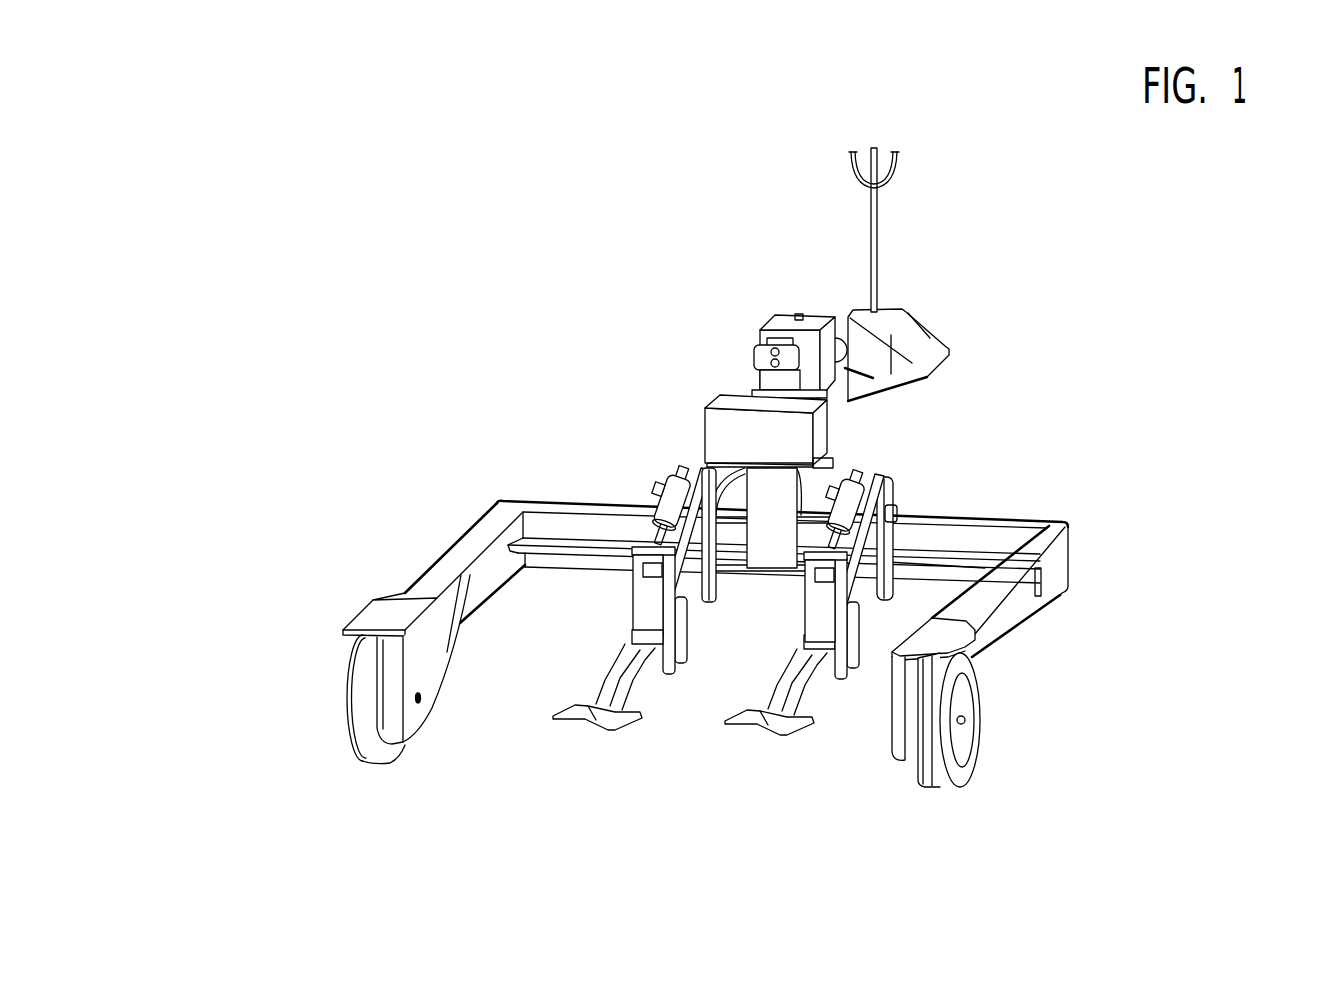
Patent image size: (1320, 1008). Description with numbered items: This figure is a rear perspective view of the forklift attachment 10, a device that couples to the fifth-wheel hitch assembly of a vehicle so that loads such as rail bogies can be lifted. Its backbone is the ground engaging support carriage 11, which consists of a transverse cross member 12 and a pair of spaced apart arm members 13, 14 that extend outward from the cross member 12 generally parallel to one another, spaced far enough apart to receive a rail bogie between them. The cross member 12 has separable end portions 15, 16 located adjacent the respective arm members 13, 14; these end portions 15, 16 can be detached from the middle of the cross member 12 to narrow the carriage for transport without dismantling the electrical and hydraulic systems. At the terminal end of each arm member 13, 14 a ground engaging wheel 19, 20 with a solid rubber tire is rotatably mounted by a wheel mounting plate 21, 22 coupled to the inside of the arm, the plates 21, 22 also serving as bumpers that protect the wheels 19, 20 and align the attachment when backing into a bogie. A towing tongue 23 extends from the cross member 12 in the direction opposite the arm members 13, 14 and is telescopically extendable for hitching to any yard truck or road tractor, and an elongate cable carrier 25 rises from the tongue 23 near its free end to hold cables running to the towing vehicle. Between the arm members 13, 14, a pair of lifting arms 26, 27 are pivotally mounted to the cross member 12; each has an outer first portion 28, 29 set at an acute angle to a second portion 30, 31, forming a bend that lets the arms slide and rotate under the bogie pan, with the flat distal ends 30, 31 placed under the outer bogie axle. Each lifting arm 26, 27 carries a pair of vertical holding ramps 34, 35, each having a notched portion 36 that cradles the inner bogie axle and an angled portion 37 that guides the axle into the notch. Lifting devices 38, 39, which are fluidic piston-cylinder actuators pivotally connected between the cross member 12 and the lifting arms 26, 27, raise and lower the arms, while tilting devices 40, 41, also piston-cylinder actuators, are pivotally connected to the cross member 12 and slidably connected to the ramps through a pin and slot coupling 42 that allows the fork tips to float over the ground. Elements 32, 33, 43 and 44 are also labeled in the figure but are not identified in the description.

The forklift attachment 10 is at (441, 160).
The support carriage 11 is at (1158, 404).
The cross member 12 is at (782, 468).
The arm member 13 is at (416, 540).
The arm member 14 is at (1102, 573).
The end portion 15 is at (724, 491).
The end portion 16 is at (998, 467).
The ground engaging wheel 19 is at (306, 727).
The ground engaging wheel 20 is at (1060, 709).
The wheel mounting plate 21 is at (406, 734).
The wheel mounting plate 22 is at (921, 764).
The towing tongue 23 is at (823, 275).
The cable carrier 25 is at (962, 230).
The lifting arm 26 is at (649, 772).
The lifting arm 27 is at (821, 773).
The first portion 28 is at (607, 784).
The first portion 29 is at (778, 788).
The second portion 30 is at (633, 730).
The second portion 31 is at (805, 732).
The left point 32 is at (516, 691).
The right point 33 is at (709, 700).
The holding ramp 34 is at (606, 610).
The holding ramp 35 is at (787, 615).
The notched portion 36 is at (688, 633).
The angled portion 37 is at (656, 674).
The lifting device 38 is at (743, 516).
The lifting device 39 is at (911, 524).
The tilting device 40 is at (658, 468).
The tilting device 41 is at (884, 475).
The pin and slot coupling 42 is at (922, 538).
The control box 43 is at (742, 314).
The hydraulic power unit 44 is at (721, 388).